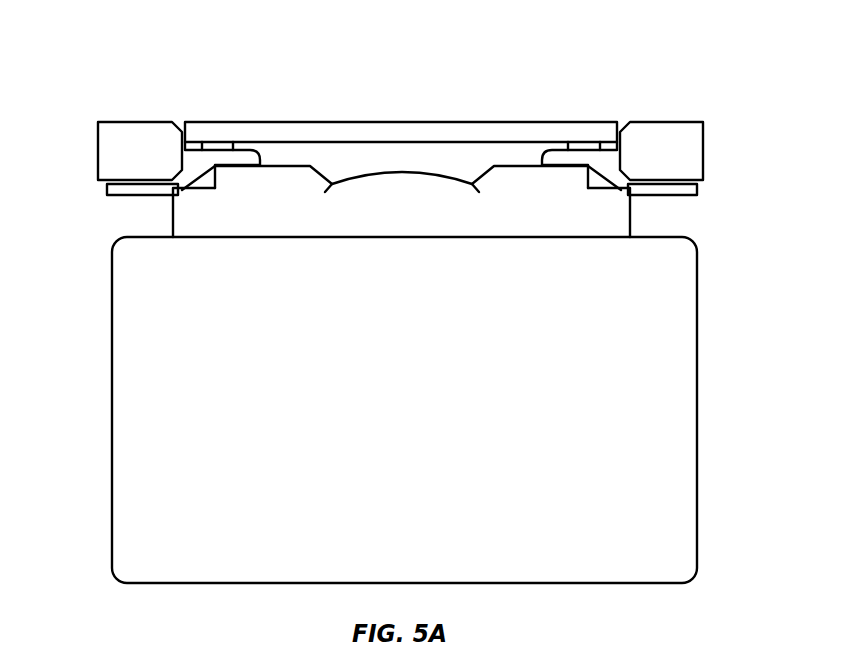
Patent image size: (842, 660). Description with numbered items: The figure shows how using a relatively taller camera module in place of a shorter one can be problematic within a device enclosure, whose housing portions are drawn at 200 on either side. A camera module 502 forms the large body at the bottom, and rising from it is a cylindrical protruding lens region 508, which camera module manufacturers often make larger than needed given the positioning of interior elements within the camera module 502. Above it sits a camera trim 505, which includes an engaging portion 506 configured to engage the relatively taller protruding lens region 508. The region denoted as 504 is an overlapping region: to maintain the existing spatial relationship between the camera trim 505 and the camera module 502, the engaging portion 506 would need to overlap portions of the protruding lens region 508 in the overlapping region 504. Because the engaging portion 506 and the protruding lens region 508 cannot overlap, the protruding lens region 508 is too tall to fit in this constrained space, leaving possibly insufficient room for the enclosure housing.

The electronic device / housing portion 200 is at (162, 159).
The camera module 502 is at (647, 549).
The overlapping region 504 is at (178, 192).
The camera trim 505 is at (443, 122).
The engaging portion 506 is at (270, 179).
The protruding lens region 508 is at (560, 228).